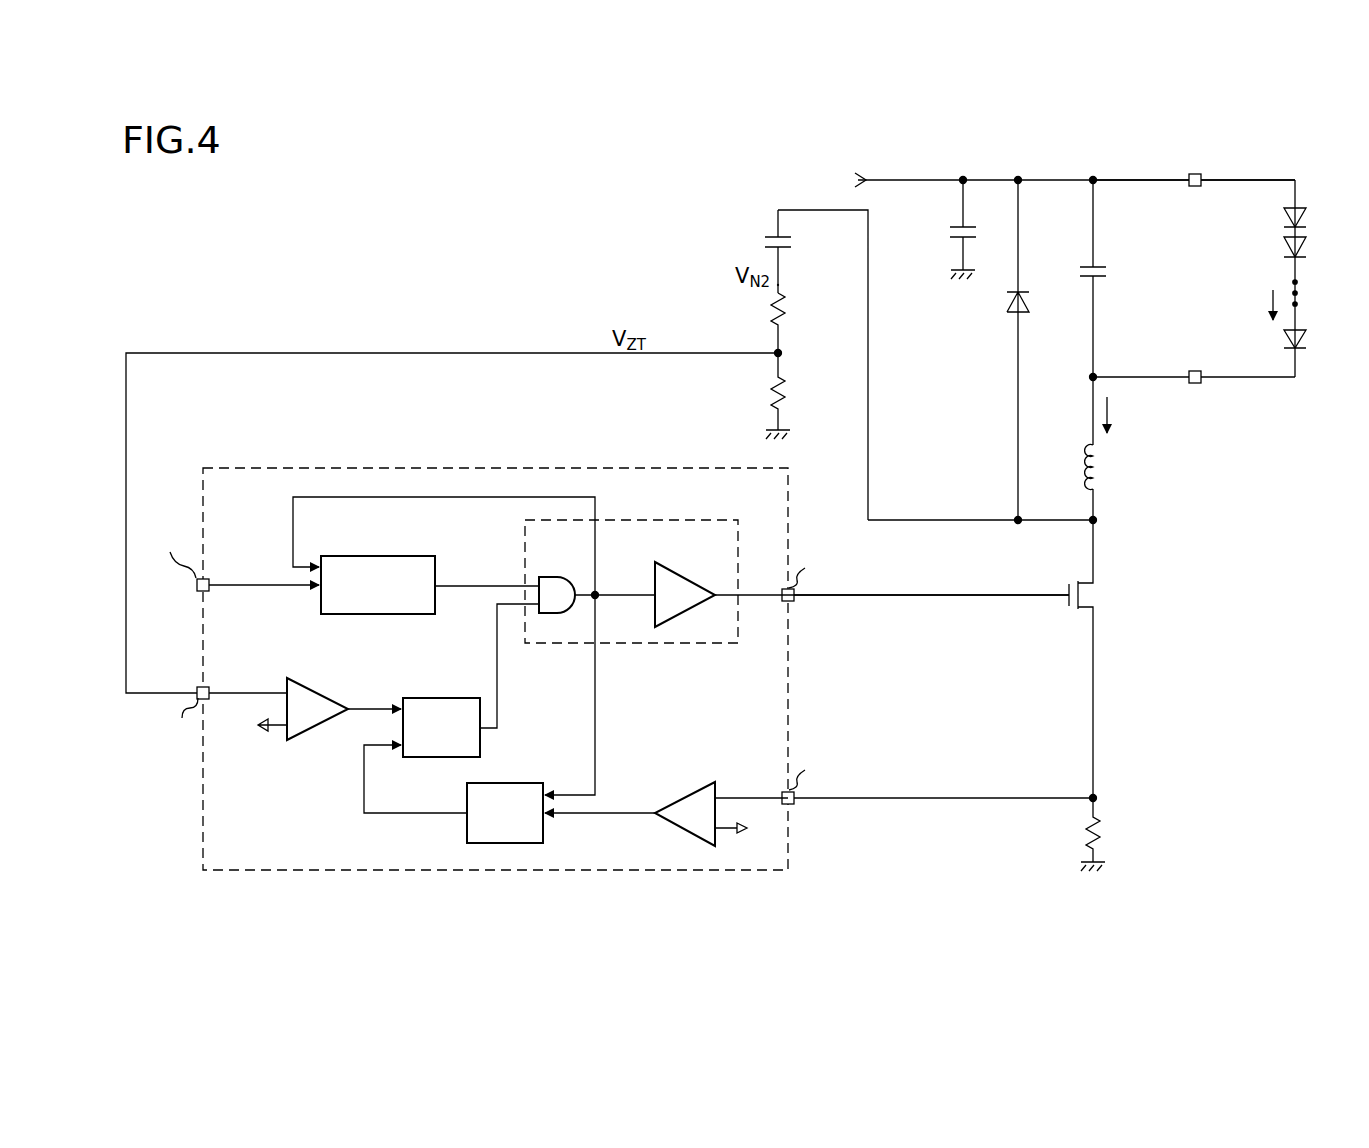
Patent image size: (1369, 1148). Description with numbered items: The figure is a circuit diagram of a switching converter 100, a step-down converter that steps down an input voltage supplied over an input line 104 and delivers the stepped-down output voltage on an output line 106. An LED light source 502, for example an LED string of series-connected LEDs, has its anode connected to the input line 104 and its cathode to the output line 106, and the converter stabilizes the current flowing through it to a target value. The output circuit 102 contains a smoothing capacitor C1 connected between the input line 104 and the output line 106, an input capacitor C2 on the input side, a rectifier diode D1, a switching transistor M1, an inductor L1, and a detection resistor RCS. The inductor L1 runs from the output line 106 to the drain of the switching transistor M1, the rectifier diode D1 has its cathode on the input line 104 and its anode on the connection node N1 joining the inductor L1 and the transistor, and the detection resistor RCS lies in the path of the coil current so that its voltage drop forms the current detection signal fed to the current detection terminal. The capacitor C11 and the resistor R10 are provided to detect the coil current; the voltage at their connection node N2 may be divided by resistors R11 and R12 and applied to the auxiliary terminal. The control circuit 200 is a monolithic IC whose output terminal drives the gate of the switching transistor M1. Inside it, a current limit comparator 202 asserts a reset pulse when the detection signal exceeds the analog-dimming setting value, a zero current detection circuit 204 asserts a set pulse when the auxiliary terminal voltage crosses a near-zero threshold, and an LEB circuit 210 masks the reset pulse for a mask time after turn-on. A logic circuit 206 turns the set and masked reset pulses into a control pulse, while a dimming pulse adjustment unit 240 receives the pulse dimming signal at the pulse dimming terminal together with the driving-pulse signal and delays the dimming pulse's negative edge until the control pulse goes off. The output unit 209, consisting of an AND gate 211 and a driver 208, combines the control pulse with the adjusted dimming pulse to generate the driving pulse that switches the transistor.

The switching converter 100 is at (356, 210).
The output circuit 102 is at (1179, 879).
The input line 104 is at (1144, 180).
The output line 106 is at (1150, 380).
The LED light source 502 is at (1310, 282).
The control circuit 200 is at (488, 875).
The current limit comparator 202 is at (658, 783).
The zero current detection circuit 204 is at (304, 690).
The logic circuit 206 is at (432, 697).
The driver 208 is at (679, 579).
The output unit 209 is at (656, 648).
The LEB circuit 210 is at (513, 783).
The AND gate 211 is at (550, 578).
The dimming pulse adjustment unit 240 is at (378, 556).
The smoothing capacitor C1 is at (1110, 270).
The input capacitor C2 is at (948, 232).
The capacitor C11 is at (760, 244).
The rectifier diode D1 is at (1031, 302).
The inductor L1 is at (1105, 466).
The switching transistor M1 is at (1105, 592).
The connection node N1 is at (1086, 516).
The connection node N2 is at (788, 284).
The resistor R10 is at (780, 362).
The resistor R11 is at (772, 313).
The resistor R12 is at (772, 391).
The detection resistor RCS is at (1107, 834).